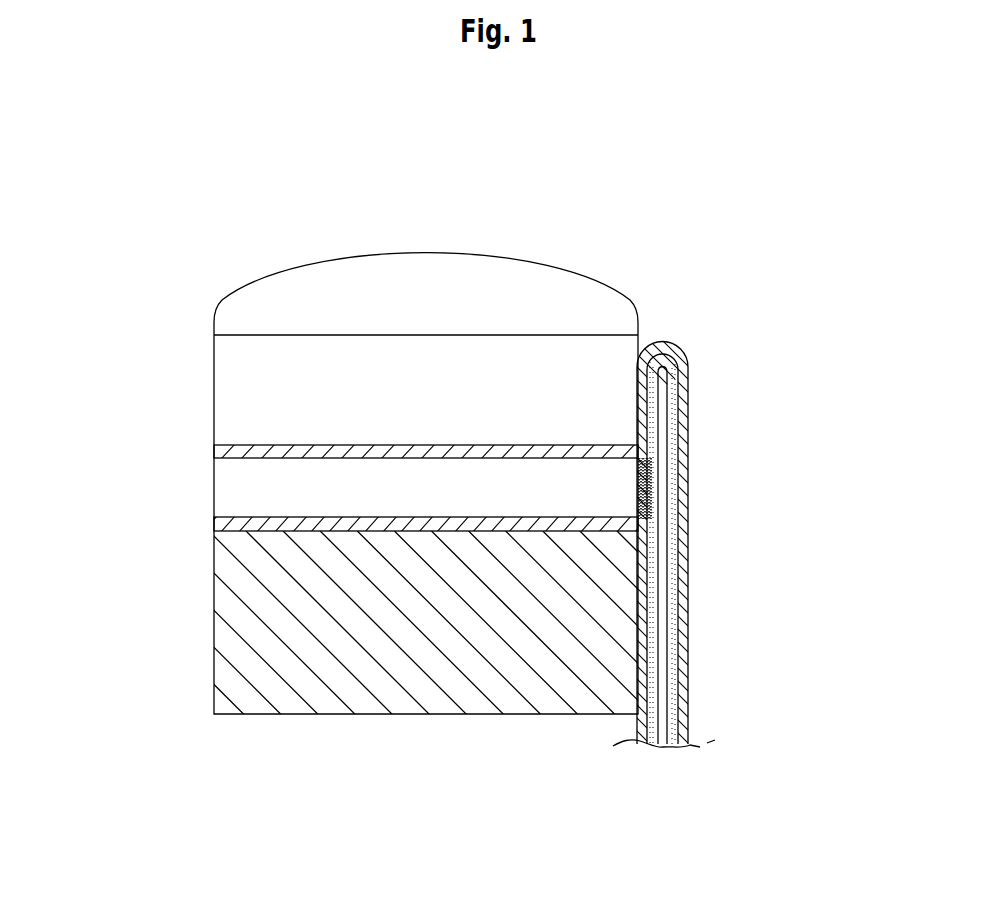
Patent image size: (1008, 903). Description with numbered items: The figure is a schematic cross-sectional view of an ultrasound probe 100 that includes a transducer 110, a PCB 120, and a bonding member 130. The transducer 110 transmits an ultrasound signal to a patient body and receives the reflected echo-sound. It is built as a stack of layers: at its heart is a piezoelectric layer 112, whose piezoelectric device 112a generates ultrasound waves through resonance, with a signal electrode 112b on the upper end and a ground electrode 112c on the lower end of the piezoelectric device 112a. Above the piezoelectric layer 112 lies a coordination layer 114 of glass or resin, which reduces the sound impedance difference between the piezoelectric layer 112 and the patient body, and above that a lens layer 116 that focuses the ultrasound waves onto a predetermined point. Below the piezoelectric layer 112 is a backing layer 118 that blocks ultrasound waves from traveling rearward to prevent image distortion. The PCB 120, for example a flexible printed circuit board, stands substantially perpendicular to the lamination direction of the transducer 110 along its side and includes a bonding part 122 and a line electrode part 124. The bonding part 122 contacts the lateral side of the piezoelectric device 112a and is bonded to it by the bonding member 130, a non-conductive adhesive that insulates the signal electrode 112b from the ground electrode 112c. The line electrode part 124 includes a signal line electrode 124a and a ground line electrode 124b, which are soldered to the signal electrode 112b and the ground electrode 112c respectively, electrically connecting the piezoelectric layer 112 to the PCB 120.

The probe 100 is at (645, 225).
The transducer 110 is at (155, 313).
The piezoelectric layer 112 is at (102, 443).
The piezoelectric device 112a is at (232, 498).
The signal electrode 112b is at (237, 453).
The ground electrode 112c is at (237, 525).
The coordination layer 114 is at (250, 396).
The lens layer 116 is at (260, 328).
The backing layer 118 is at (240, 633).
The PCB 120 is at (695, 667).
The bonding part 122 is at (657, 484).
The line electrode part 124 is at (808, 552).
The signal line electrode 124a is at (686, 560).
The ground line electrode 124b is at (648, 603).
The bonding member 130 is at (651, 467).